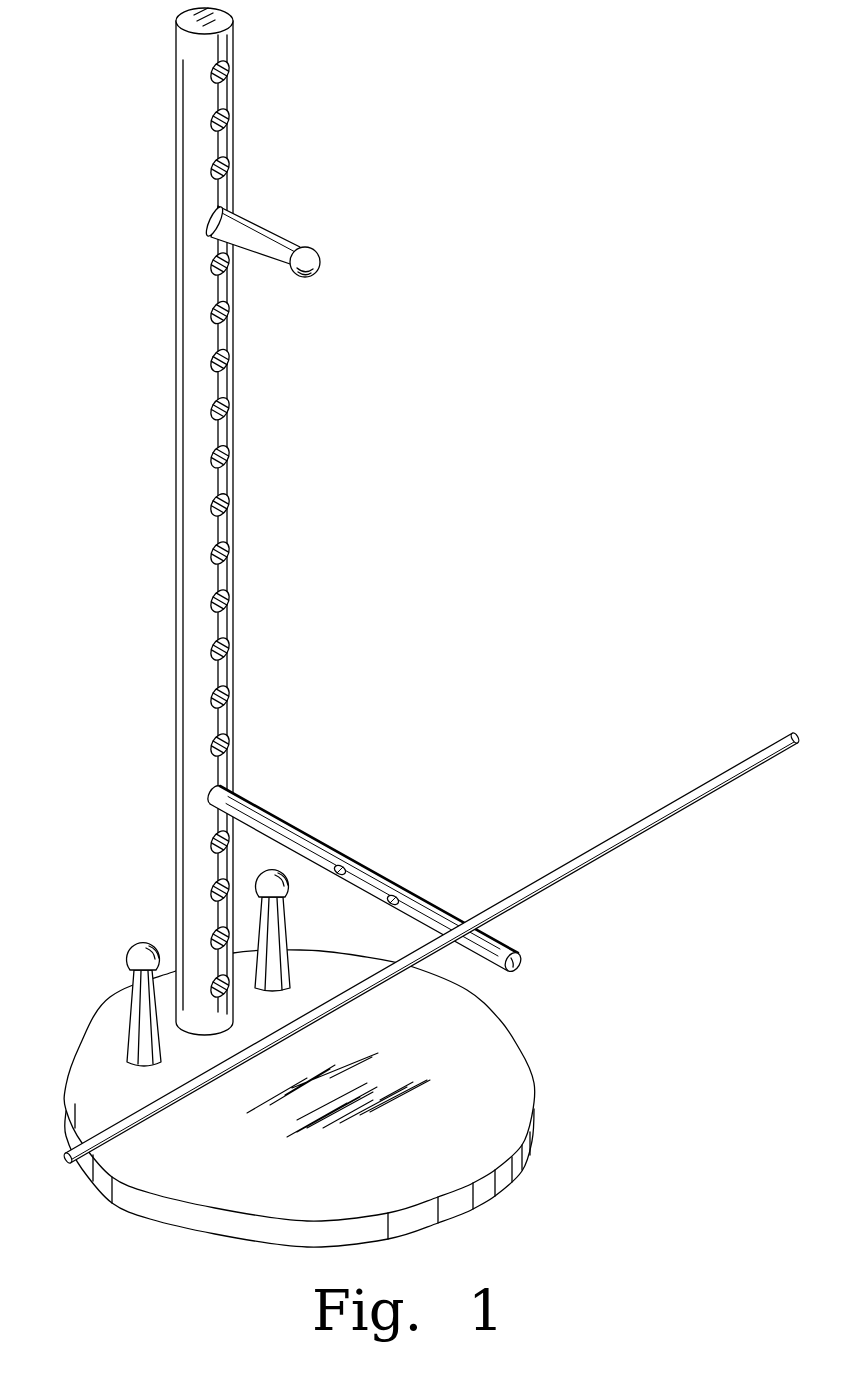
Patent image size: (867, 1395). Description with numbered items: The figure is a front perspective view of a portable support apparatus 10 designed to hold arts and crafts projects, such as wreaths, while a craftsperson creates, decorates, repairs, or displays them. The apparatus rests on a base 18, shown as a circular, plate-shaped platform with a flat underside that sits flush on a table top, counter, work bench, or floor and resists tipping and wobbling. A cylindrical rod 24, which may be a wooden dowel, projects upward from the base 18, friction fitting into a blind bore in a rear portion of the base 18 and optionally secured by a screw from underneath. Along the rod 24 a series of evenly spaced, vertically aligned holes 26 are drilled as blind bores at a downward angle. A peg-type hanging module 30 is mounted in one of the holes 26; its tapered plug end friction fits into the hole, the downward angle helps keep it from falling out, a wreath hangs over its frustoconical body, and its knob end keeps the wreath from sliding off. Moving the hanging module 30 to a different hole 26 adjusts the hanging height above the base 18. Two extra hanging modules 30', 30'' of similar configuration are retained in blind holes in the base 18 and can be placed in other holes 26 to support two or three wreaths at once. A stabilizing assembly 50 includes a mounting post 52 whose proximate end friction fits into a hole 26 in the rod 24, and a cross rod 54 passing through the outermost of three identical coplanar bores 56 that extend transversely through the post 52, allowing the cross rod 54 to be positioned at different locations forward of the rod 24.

The support apparatus 10 is at (432, 627).
The base 18 is at (512, 1048).
The cylindrical rod 24 is at (220, 437).
The holes 26 is at (232, 126).
The hanging module 30 is at (294, 214).
The hanging module 30' is at (119, 1004).
The hanging module 30'' is at (303, 930).
The stabilizing assembly 50 is at (432, 948).
The mounting post 52 is at (283, 826).
The cross rod 54 is at (607, 840).
The bores 56 is at (338, 868).